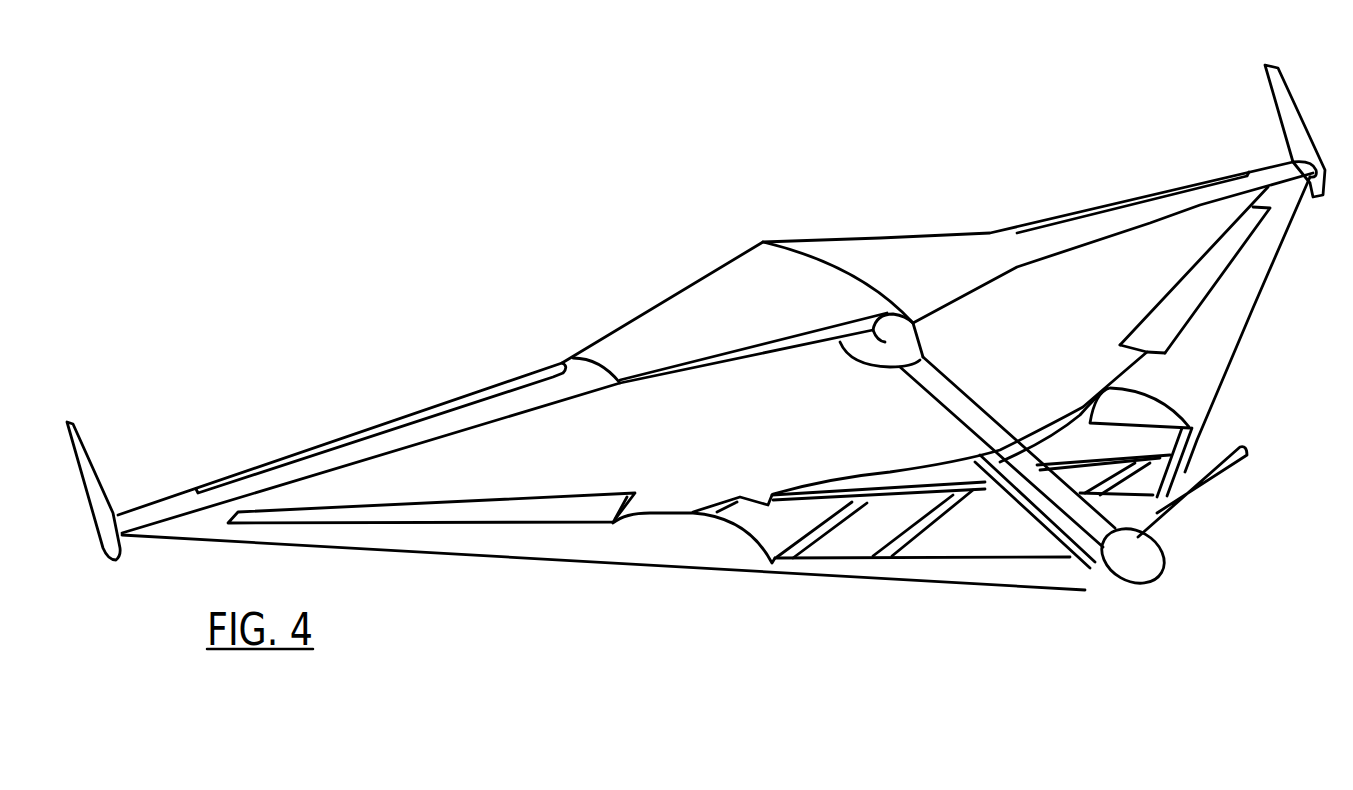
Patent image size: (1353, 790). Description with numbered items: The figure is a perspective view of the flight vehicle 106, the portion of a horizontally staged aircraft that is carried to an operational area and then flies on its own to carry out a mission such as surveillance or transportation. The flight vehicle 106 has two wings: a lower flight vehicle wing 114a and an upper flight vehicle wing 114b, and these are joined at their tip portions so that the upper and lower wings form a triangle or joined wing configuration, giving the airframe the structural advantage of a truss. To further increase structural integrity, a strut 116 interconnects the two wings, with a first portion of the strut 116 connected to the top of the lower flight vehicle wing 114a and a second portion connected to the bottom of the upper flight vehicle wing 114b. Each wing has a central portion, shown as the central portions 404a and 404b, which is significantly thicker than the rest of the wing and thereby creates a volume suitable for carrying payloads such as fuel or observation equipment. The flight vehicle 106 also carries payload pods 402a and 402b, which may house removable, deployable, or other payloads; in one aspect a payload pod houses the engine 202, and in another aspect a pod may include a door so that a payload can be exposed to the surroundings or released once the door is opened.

The flight vehicle 106 is at (448, 555).
The lower flight vehicle wing 114a is at (692, 567).
The upper flight vehicle wing 114b is at (400, 419).
The strut 116 is at (948, 380).
The engine 202 is at (1163, 563).
The payload pod 402a is at (1150, 417).
The payload pod 402b is at (842, 343).
The central portion 404a is at (862, 540).
The central portion 404b is at (645, 353).